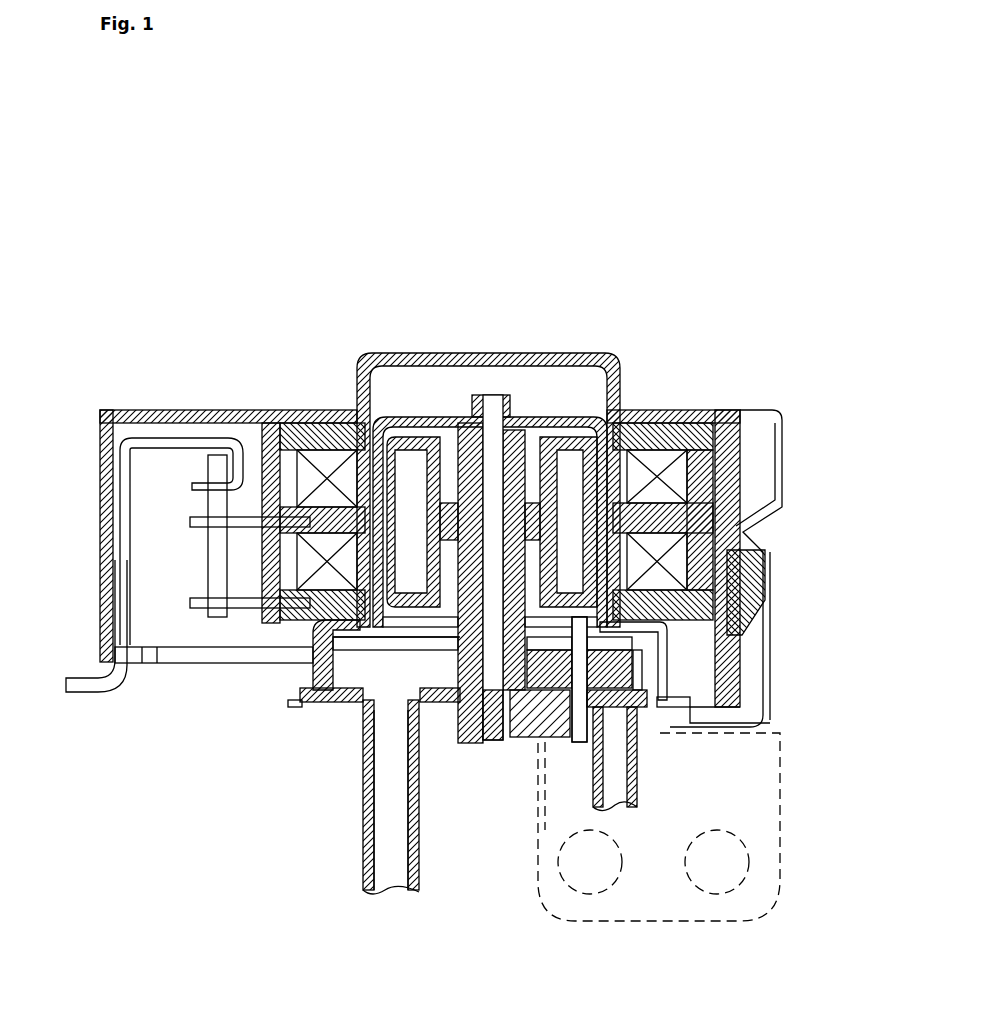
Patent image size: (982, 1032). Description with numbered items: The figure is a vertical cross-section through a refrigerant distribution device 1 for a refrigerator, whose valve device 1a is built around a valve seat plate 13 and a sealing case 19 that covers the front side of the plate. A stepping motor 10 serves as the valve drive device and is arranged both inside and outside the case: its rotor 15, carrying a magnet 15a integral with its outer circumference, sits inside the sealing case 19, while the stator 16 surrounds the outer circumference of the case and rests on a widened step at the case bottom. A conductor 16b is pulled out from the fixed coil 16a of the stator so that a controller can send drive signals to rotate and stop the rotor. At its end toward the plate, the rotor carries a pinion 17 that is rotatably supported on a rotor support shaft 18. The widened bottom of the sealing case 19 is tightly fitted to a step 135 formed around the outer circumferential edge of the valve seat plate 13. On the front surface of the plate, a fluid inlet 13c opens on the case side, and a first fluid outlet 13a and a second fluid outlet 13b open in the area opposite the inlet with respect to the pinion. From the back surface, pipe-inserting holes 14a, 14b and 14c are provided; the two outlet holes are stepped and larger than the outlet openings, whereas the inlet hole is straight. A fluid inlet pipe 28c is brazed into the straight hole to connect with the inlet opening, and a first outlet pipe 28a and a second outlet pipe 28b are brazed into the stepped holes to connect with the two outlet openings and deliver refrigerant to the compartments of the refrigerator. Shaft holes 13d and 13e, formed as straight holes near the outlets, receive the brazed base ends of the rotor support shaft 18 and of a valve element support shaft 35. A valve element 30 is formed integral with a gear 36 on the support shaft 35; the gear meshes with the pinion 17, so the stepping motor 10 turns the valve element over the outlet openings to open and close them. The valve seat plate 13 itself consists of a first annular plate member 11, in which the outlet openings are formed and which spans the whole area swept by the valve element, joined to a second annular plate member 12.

The refrigerant distribution device 1 is at (178, 383).
The valve device 1a is at (433, 733).
The stepping motor 10 is at (855, 305).
The first annular plate member 11 is at (500, 710).
The second annular plate member 12 is at (440, 708).
The valve seat plate 13 is at (500, 903).
The first fluid outlet 13a is at (640, 740).
The second fluid outlet 13b is at (727, 710).
The fluid inlet 13c is at (460, 663).
The shaft hole 13d is at (467, 710).
The shaft hole 13e is at (553, 742).
The pipe-inserting hole 14a is at (583, 742).
The pipe-inserting hole 14b is at (567, 841).
The pipe-inserting hole 14c is at (352, 710).
The rotor 15 is at (533, 513).
The magnet 15a is at (627, 425).
The stator 16 is at (722, 410).
The fixed coil 16a is at (657, 465).
The conductor 16b is at (90, 690).
The pinion 17 is at (500, 655).
The rotor support shaft 18 is at (498, 455).
The sealing case 19 is at (570, 473).
The first outlet pipe 28a is at (625, 784).
The second outlet pipe 28b is at (771, 884).
The fluid inlet pipe 28c is at (363, 840).
The valve element 30 is at (562, 690).
The valve element support shaft 35 is at (745, 633).
The gear 36 is at (668, 662).
The step 135 is at (680, 710).